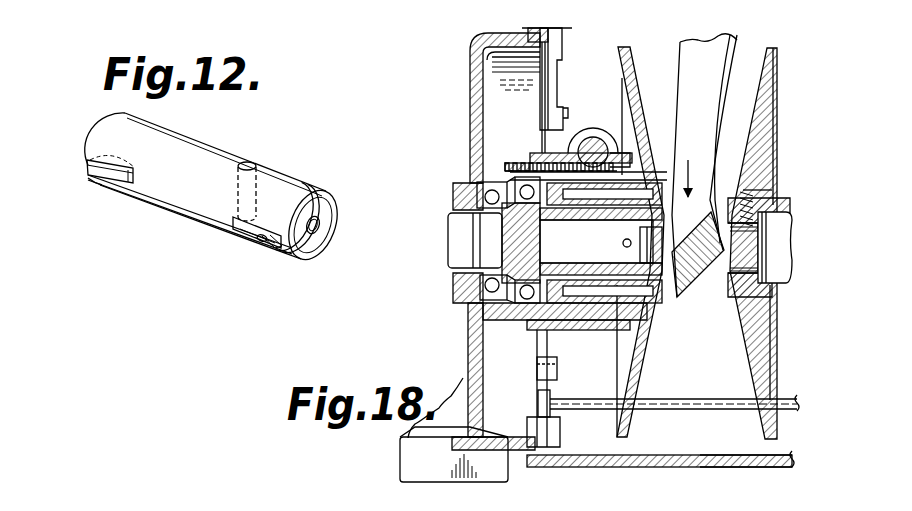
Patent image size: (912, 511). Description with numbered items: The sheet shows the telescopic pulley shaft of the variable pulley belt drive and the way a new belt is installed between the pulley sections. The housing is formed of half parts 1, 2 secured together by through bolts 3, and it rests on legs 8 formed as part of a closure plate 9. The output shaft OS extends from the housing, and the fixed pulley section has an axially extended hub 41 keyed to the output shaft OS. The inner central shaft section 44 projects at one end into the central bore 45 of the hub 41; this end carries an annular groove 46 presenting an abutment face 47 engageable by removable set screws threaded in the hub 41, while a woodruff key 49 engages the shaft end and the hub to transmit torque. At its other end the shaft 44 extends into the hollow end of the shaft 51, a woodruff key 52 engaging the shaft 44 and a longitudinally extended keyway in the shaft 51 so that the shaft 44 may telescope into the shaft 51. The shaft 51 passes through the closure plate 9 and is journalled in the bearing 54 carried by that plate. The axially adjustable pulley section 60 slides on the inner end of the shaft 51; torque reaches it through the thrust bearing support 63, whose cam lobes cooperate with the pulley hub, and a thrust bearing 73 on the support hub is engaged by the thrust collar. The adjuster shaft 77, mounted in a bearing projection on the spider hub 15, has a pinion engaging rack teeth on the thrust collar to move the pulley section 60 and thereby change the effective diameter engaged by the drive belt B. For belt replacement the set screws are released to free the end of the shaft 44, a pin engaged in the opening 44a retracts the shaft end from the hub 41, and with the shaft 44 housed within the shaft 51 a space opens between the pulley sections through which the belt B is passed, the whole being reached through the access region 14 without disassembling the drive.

In FIG. 12, the inner central shaft section 44 is at (86, 126).
In FIG. 18, the inner central shaft section 44 is at (608, 241).
In FIG. 12, the opening 44a is at (246, 165).
In FIG. 12, the annular groove 46 is at (300, 153).
In FIG. 12, the abutment face 47 is at (270, 205).
In FIG. 12, the woodruff key 52 is at (104, 172).
In FIG. 12, the woodruff key 49 is at (263, 238).
In FIG. 18, the housing closure plate 9 is at (470, 62).
In FIG. 18, the thrust bearing support 63 is at (543, 180).
In FIG. 18, the adjuster shaft 77 is at (597, 147).
In FIG. 18, the drive belt B is at (692, 57).
In FIG. 18, the central bore 45 is at (725, 255).
In FIG. 18, the axially adjustable pulley section 60 is at (642, 364).
In FIG. 18, the hub 41 is at (747, 355).
In FIG. 18, the output shaft OS is at (790, 220).
In FIG. 18, the shaft 51 is at (457, 245).
In FIG. 18, the bearing 54 is at (473, 298).
In FIG. 18, the thrust bearing 73 is at (518, 327).
In FIG. 18, the spider hub 15 is at (595, 328).
In FIG. 18, the through bolt 3 is at (706, 410).
In FIG. 18, the housing half part 1 is at (628, 467).
In FIG. 18, the housing half part 2 is at (753, 467).
In FIG. 18, the base 14 is at (718, 470).
In FIG. 18, the leg 8 is at (463, 378).